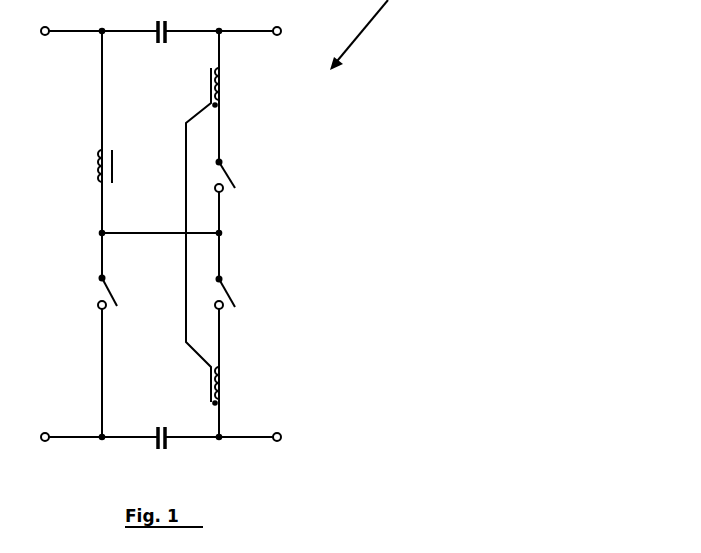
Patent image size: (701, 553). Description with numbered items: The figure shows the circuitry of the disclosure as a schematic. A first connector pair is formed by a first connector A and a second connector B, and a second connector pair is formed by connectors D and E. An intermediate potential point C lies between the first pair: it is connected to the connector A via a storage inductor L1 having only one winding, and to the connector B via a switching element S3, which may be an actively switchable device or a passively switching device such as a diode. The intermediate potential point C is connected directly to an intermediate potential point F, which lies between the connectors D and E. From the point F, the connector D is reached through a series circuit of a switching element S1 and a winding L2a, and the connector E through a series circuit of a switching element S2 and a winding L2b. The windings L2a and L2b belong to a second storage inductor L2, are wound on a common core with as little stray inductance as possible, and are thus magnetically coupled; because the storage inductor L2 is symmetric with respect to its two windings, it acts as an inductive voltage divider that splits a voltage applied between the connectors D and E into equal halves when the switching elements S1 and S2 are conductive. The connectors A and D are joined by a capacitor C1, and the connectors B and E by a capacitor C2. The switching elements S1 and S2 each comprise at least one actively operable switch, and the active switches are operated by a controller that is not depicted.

The first connector A is at (43, 46).
The second connector B is at (43, 427).
The intermediate potential point C is at (90, 234).
The connector D is at (277, 46).
The connector E is at (276, 427).
The intermediate potential point F is at (228, 234).
The capacitor C1 is at (162, 21).
The capacitor C2 is at (161, 452).
The storage inductor L1 is at (87, 166).
The second storage inductor L2 is at (185, 237).
The winding L2a is at (238, 84).
The winding L2b is at (238, 383).
The switching element S1 is at (237, 176).
The switching element S2 is at (237, 293).
The switching element S3 is at (119, 292).